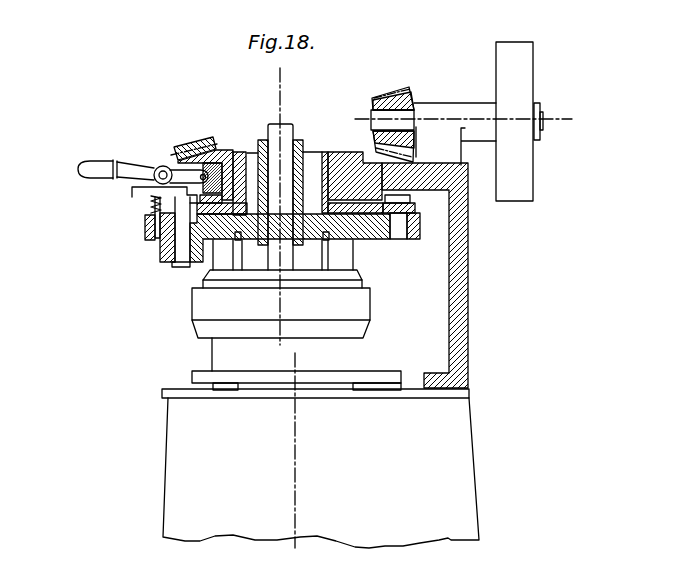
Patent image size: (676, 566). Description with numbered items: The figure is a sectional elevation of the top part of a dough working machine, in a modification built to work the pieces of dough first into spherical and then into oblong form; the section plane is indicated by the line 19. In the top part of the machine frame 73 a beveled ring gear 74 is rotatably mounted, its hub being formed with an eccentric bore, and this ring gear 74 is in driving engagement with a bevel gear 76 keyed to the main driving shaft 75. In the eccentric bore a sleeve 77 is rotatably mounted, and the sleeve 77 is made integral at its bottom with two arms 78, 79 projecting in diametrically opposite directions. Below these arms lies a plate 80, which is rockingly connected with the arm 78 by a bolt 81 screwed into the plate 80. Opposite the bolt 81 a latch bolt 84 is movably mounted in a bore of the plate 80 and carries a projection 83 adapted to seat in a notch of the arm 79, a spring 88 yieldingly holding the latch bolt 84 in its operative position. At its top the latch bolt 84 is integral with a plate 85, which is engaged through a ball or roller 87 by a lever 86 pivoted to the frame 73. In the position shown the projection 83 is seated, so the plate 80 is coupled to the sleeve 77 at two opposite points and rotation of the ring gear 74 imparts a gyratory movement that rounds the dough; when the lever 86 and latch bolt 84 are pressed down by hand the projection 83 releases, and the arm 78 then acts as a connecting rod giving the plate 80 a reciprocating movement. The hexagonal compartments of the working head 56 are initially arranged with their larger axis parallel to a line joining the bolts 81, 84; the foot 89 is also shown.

The section line 19- 19 is at (590, 190).
The working head 56 is at (354, 306).
The machine frame 73 is at (469, 301).
The beveled ring gear 74 is at (347, 160).
The main driving shaft 75 is at (544, 118).
The bevel gear 76 is at (396, 89).
The sleeve 77 is at (320, 152).
The arm 78 is at (413, 207).
The arm 79 is at (201, 205).
The plate 80 is at (415, 239).
The bolt 81 is at (399, 214).
The projection 83 is at (193, 218).
The latch bolt 84 is at (188, 245).
The plate 85 is at (135, 191).
The lever 86 is at (88, 167).
The ball or roller 87 is at (160, 168).
The spring 88 is at (152, 208).
The foot 89 is at (185, 267).